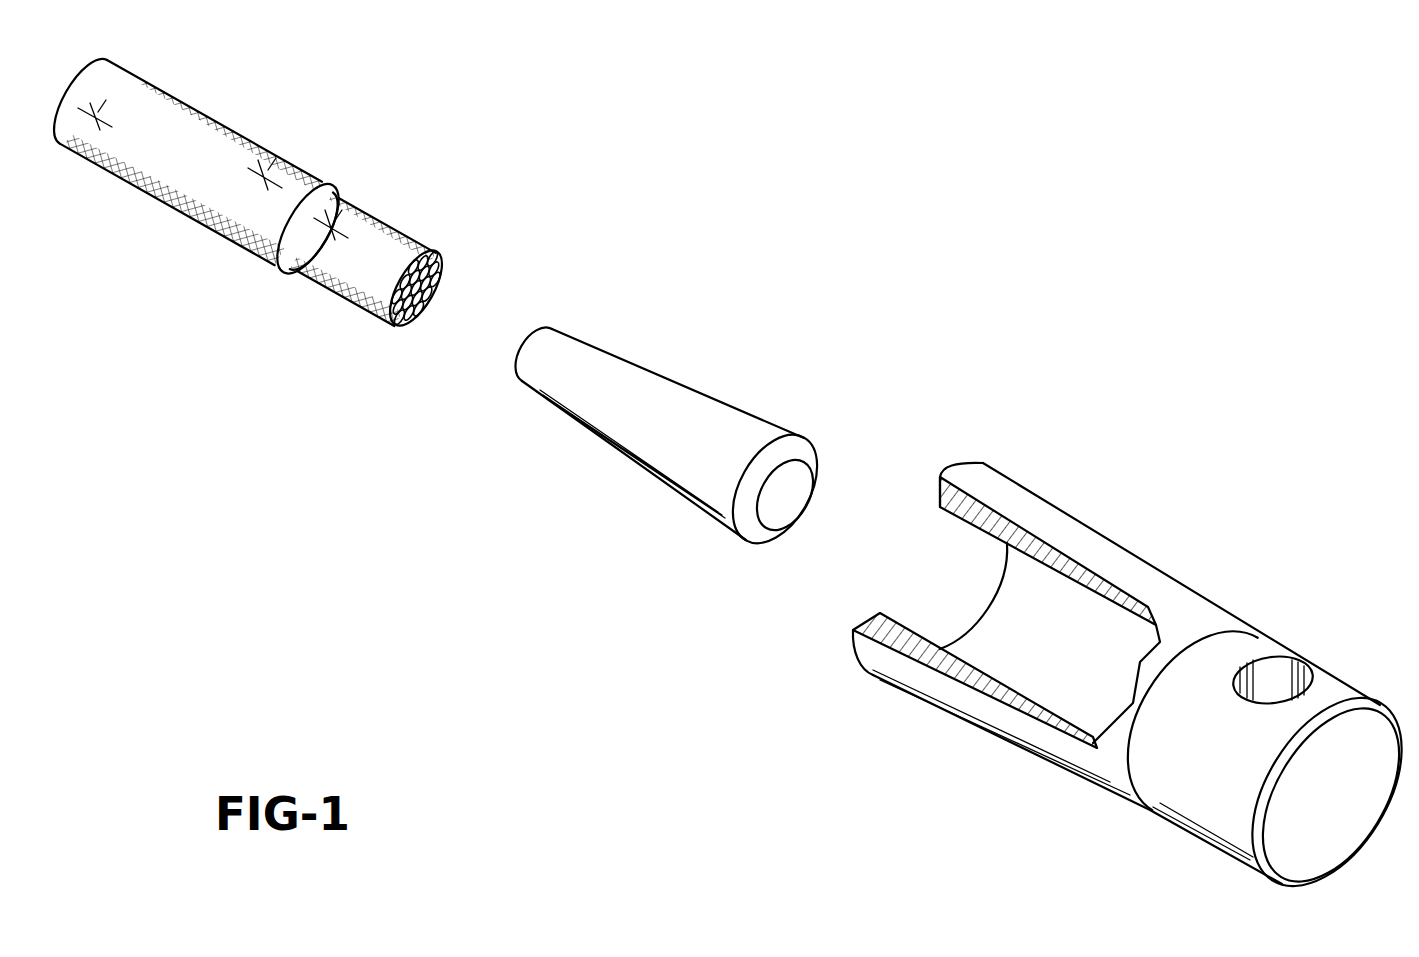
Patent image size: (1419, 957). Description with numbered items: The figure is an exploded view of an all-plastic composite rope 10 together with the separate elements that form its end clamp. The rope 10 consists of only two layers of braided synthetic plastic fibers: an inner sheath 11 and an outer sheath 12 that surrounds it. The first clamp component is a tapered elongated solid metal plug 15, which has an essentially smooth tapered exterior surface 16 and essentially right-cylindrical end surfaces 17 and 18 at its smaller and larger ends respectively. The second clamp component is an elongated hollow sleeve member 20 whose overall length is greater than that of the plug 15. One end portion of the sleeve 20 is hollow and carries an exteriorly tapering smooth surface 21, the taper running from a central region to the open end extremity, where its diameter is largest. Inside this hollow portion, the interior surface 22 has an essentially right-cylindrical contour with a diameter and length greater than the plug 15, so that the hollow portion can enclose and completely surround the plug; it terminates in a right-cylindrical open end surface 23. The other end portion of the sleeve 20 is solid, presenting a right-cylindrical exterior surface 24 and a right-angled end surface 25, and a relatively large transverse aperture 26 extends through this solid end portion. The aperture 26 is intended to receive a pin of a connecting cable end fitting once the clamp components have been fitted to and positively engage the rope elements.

The composite rope 10 is at (253, 196).
The inner sheath 11 is at (380, 233).
The outer sheath 12 is at (183, 213).
The tapered elongated solid metal plug 15 is at (645, 451).
The tapered exterior surface 16 is at (680, 439).
The right-cylindrical end surface 17 is at (512, 360).
The right-cylindrical end surface 18 is at (790, 507).
The elongated hollow sleeve member 20 is at (1136, 660).
The exteriorly tapering smooth surface 21 is at (1050, 518).
The interior surface 22 is at (1060, 646).
The right-cylindrical open end surface 23 is at (940, 490).
The solid right-cylindrical exterior surface 24 is at (1263, 640).
The right-angled end surface 25 is at (1346, 804).
The transverse aperture 26 is at (1275, 687).